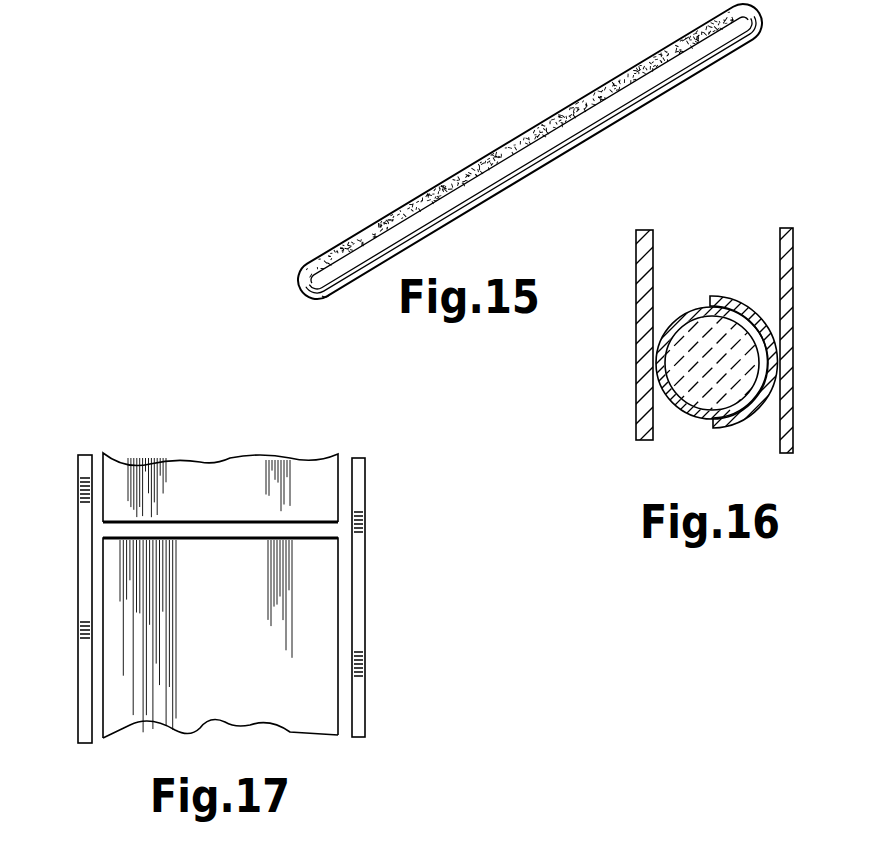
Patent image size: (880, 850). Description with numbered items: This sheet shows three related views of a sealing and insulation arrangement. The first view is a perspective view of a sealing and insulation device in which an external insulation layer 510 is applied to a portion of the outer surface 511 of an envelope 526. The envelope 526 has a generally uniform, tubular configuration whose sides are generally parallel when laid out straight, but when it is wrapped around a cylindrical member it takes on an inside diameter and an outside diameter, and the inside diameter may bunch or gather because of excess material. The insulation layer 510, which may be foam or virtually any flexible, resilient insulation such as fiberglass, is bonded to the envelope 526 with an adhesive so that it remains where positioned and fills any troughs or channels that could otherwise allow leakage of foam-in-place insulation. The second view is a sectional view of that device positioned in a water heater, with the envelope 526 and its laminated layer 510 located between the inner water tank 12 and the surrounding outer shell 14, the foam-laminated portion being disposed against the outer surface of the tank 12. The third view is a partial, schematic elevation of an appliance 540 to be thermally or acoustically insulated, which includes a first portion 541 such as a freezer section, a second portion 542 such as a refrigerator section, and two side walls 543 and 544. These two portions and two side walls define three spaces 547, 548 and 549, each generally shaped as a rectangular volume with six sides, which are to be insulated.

In FIG. 15, the external insulation layer 510 is at (681, 37).
In FIG. 16, the external insulation layer 510 is at (740, 423).
In FIG. 15, the outer surface 511 is at (714, 50).
In FIG. 15, the envelope 526 is at (327, 298).
In FIG. 16, the envelope 526 is at (700, 421).
In FIG. 16, the outer shell 14 is at (645, 290).
In FIG. 16, the inner water tank 12 is at (786, 290).
In FIG. 17, the appliance 540 is at (373, 468).
In FIG. 17, the first portion 541 is at (222, 480).
In FIG. 17, the second portion 542 is at (257, 751).
In FIG. 17, the side wall 543 is at (357, 503).
In FIG. 17, the side wall 544 is at (82, 601).
In FIG. 17, the space 547 is at (98, 560).
In FIG. 17, the space 548 is at (168, 525).
In FIG. 17, the space 549 is at (342, 580).